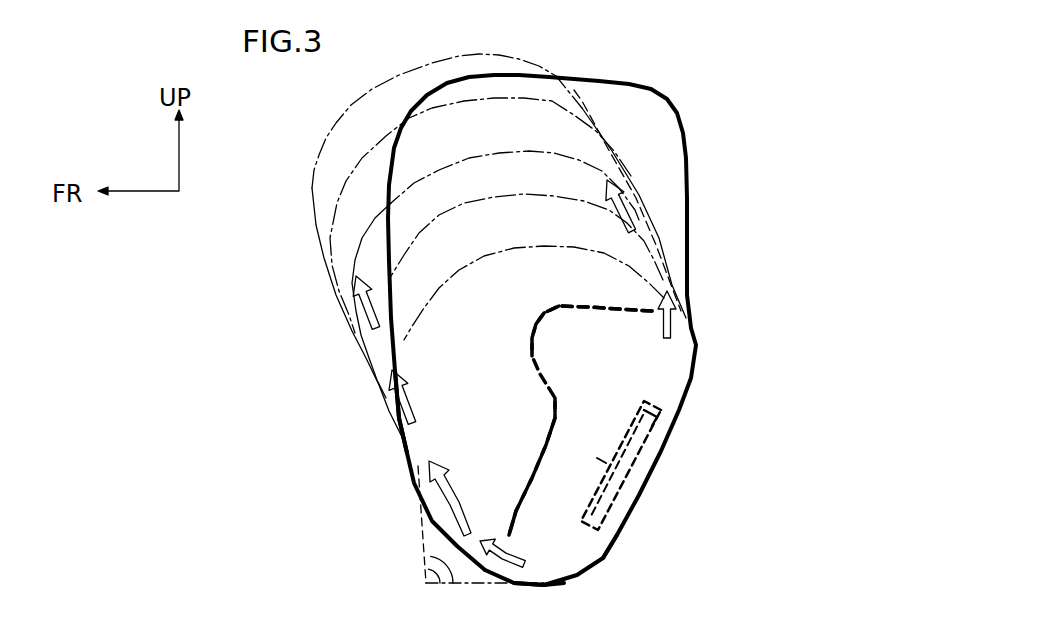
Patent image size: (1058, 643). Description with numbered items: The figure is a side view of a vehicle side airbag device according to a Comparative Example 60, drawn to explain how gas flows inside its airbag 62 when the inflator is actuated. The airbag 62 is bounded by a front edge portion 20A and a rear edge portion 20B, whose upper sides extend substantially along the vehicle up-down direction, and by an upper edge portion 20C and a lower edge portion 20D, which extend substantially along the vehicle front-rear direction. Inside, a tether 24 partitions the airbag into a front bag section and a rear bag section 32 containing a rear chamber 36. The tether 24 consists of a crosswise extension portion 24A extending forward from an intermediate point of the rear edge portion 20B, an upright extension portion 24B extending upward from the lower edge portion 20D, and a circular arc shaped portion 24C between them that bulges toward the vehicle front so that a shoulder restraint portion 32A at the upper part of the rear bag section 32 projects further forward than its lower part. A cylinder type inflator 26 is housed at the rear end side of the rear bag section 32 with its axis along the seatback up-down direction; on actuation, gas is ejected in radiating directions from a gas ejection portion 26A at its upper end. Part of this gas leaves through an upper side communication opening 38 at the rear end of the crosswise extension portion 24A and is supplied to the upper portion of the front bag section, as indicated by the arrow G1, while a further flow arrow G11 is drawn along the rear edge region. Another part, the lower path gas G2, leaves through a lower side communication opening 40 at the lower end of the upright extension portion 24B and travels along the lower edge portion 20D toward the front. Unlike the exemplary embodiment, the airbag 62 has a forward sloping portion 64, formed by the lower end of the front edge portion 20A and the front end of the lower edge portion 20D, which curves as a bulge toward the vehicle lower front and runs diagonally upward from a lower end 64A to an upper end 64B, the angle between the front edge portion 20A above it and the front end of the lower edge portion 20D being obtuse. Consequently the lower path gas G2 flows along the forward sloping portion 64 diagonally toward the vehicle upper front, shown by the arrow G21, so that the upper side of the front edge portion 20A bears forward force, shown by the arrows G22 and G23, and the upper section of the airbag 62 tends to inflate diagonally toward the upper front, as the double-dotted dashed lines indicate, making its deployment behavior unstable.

The Comparative Example 60 is at (749, 128).
The airbag 62 is at (316, 227).
The front edge portion 20A is at (326, 262).
The rear edge portion 20B is at (640, 180).
The upper edge portion 20C is at (334, 122).
The lower edge portion 20D is at (545, 585).
The tether 24 is at (542, 386).
The crosswise extension portion 24A is at (597, 313).
The upright extension portion 24B is at (547, 440).
The circular arc shaped portion 24C is at (540, 320).
The inflator 26 is at (623, 520).
The gas ejection portion 26A is at (663, 410).
The rear bag section 32 is at (583, 443).
The shoulder restraint portion 32A is at (533, 347).
The rear chamber 36 is at (572, 474).
The upper side communication opening 38 is at (650, 307).
The lower side communication opening 40 is at (508, 528).
The forward sloping portion 64 is at (440, 535).
The lower end 64A is at (522, 586).
The upper end 64B is at (403, 443).
The arrow G1 is at (677, 325).
The gas flow along rear chamber G11 is at (632, 218).
The lower path gas G2 is at (513, 557).
The arrow G21 is at (440, 500).
The arrow G22 is at (401, 422).
The arrow G23 is at (366, 306).